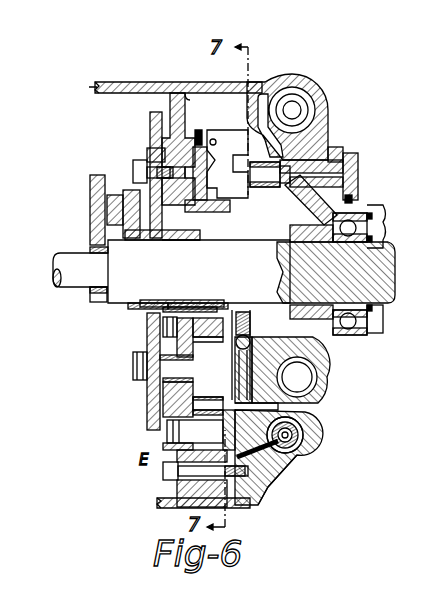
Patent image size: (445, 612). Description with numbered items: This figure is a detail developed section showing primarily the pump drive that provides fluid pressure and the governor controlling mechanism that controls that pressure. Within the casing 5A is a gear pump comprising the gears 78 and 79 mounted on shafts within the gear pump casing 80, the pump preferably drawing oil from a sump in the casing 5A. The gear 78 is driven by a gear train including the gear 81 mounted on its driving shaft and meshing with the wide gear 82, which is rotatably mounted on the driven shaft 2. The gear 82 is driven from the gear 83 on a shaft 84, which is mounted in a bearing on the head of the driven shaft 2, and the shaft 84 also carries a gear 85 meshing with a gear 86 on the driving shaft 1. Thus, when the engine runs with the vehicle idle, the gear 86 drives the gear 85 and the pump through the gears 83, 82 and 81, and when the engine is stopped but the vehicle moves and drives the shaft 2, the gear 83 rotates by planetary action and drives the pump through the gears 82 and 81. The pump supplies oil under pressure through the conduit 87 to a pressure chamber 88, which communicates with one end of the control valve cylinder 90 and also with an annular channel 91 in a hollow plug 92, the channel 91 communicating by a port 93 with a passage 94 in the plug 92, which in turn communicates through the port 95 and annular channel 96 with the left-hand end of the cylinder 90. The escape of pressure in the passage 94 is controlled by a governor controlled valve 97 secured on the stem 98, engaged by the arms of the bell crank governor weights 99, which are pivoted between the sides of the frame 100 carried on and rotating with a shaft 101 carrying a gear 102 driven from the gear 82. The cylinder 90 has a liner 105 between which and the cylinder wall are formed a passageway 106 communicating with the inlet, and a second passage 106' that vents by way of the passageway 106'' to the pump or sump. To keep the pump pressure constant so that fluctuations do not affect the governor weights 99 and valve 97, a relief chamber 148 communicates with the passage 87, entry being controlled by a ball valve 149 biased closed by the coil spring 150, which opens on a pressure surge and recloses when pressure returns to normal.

The driving shaft 1 is at (57, 290).
The driven shaft 2 is at (392, 261).
The casing 5A is at (310, 92).
The gear 78 is at (187, 367).
The gear 79 is at (165, 470).
The gear pump casing 80 is at (150, 427).
The gear 81 is at (145, 343).
The wide gear 82 is at (148, 322).
The gear 83 is at (135, 188).
The shaft 84 is at (110, 195).
The gear 85 is at (90, 185).
The gear 86 is at (90, 302).
The conduit 87 is at (300, 405).
The pressure chamber 88 is at (318, 383).
The control valve cylinder 90 is at (310, 453).
The annular channel 91 is at (357, 168).
The hollow plug 92 is at (352, 181).
The port 93 is at (353, 200).
The passage 94 is at (345, 156).
The port 95 is at (335, 150).
The annular channel 96 is at (296, 200).
The governor controlled valve 97 is at (282, 168).
The stem 98 is at (245, 168).
The bell crank governor weights 99 is at (228, 216).
The frame 100 is at (198, 128).
The shaft 101 is at (170, 240).
The gear 102 is at (148, 128).
The liner 105 is at (307, 445).
The passageway 106 is at (296, 457).
The second passage 106' is at (289, 475).
The passageway 106'' is at (276, 506).
The relief chamber 148 is at (253, 330).
The ball valve 149 is at (248, 305).
The coil spring 150 is at (240, 305).